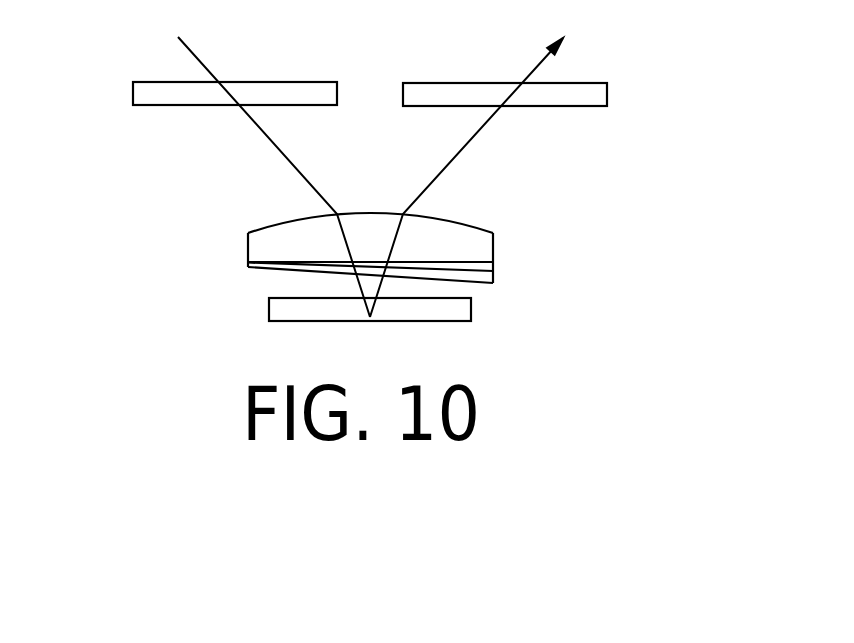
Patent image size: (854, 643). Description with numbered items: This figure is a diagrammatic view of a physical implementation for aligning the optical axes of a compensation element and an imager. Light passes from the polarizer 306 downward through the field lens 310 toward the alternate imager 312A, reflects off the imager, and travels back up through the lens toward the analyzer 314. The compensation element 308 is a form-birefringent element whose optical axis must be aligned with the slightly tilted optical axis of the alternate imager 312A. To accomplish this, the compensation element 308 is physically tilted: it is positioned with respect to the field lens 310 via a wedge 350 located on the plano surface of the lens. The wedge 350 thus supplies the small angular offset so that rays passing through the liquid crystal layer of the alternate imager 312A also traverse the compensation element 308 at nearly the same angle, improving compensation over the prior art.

The polarizer 306 is at (133, 93).
The analyzer 314 is at (607, 93).
The compensation element 308 is at (248, 264).
The field lens 310 is at (493, 250).
The wedge 350 is at (493, 265).
The alternate imager 312A is at (471, 308).